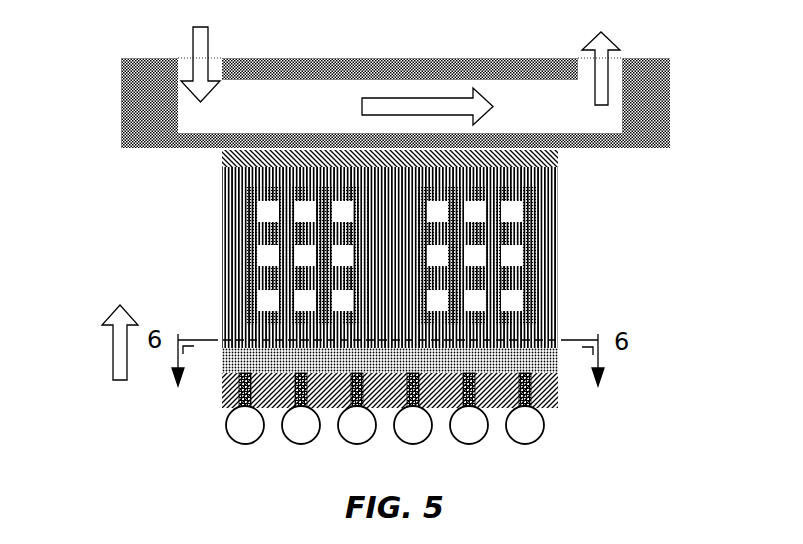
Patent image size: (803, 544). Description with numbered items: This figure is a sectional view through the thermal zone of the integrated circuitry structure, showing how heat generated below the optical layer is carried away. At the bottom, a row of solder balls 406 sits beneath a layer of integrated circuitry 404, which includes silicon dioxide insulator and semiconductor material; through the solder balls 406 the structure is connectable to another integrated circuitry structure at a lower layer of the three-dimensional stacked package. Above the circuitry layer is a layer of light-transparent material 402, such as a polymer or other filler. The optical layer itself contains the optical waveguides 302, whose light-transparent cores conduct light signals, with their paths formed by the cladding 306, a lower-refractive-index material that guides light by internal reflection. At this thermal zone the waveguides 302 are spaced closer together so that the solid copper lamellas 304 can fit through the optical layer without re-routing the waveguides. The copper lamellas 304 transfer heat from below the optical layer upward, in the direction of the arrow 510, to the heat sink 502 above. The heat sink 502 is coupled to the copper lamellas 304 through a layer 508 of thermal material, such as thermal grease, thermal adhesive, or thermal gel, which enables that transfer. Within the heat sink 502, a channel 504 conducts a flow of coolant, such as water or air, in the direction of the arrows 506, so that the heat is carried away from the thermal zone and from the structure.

The optical waveguides 302 is at (350, 212).
The copper lamellas 304 is at (232, 178).
The cladding 306 is at (250, 258).
The light-transparent material 402 is at (553, 363).
The layer of integrated circuitry 404 is at (224, 398).
The solder balls 406 is at (245, 445).
The heat sink 502 is at (121, 99).
The channel 504 is at (257, 116).
The arrows 506 is at (199, 42).
The layer of thermal material 508 is at (560, 158).
The arrow 510 is at (118, 345).